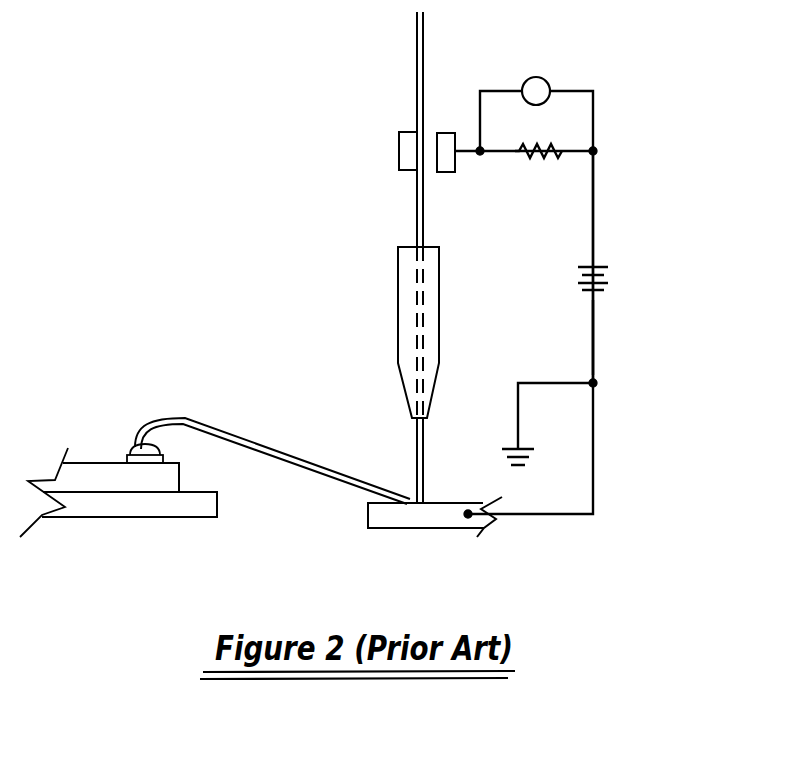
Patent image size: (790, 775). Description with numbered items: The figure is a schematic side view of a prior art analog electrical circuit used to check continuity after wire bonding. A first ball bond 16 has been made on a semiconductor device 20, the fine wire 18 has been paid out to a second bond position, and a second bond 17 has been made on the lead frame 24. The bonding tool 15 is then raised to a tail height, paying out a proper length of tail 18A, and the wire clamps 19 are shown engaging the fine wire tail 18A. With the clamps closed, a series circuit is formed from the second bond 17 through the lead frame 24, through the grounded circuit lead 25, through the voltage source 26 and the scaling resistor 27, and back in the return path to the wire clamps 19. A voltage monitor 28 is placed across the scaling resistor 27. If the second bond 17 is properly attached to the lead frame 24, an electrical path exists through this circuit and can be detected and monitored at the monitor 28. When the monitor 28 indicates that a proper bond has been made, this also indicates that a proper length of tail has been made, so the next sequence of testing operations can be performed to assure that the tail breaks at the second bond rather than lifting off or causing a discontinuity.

The bonding tool 15 is at (430, 270).
The first ball bond 16 is at (137, 444).
The second bond 17 is at (412, 500).
The fine wire 18 is at (250, 441).
The tail 18A is at (417, 443).
The wire clamps 19 is at (405, 140).
The semiconductor device 20 is at (147, 505).
The lead frame 24 is at (443, 522).
The grounded circuit lead 25 is at (593, 340).
The voltage source 26 is at (602, 267).
The scaling resistor 27 is at (560, 150).
The voltage monitor 28 is at (543, 77).